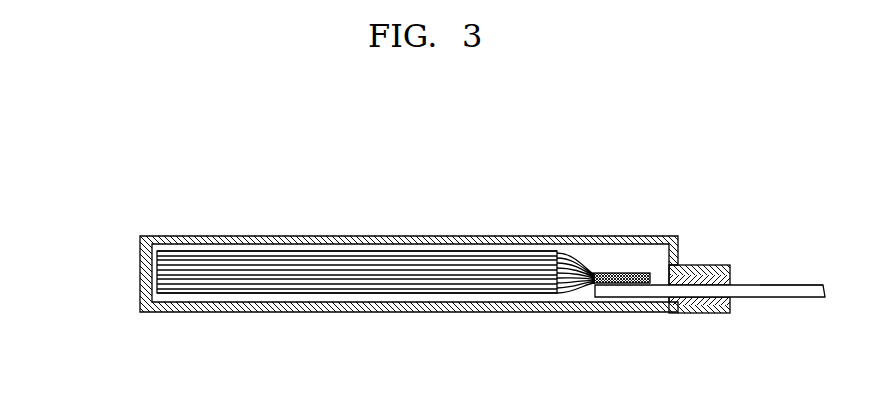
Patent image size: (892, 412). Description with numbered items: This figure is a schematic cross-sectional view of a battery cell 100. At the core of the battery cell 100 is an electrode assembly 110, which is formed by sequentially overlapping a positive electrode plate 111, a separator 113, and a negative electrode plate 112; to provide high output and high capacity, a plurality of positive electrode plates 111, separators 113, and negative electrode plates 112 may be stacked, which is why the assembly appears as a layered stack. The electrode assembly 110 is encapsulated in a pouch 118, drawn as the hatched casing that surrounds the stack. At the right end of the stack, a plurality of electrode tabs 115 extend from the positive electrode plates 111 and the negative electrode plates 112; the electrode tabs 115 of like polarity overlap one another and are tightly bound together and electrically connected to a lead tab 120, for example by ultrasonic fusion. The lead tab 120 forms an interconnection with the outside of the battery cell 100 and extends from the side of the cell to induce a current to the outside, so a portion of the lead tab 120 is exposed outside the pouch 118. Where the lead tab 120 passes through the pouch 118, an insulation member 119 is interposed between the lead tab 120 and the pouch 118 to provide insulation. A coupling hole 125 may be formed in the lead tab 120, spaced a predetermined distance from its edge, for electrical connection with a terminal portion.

The battery cell 100 is at (295, 221).
The electrode assembly 110 is at (293, 258).
The positive electrode plate 111 is at (162, 258).
The negative electrode plate 112 is at (158, 268).
The separator 113 is at (158, 262).
The electrode tab 115 is at (576, 262).
The pouch 118 is at (204, 236).
The insulation member 119 is at (715, 313).
The lead tab 120 is at (810, 297).
The coupling hole 125 is at (787, 291).